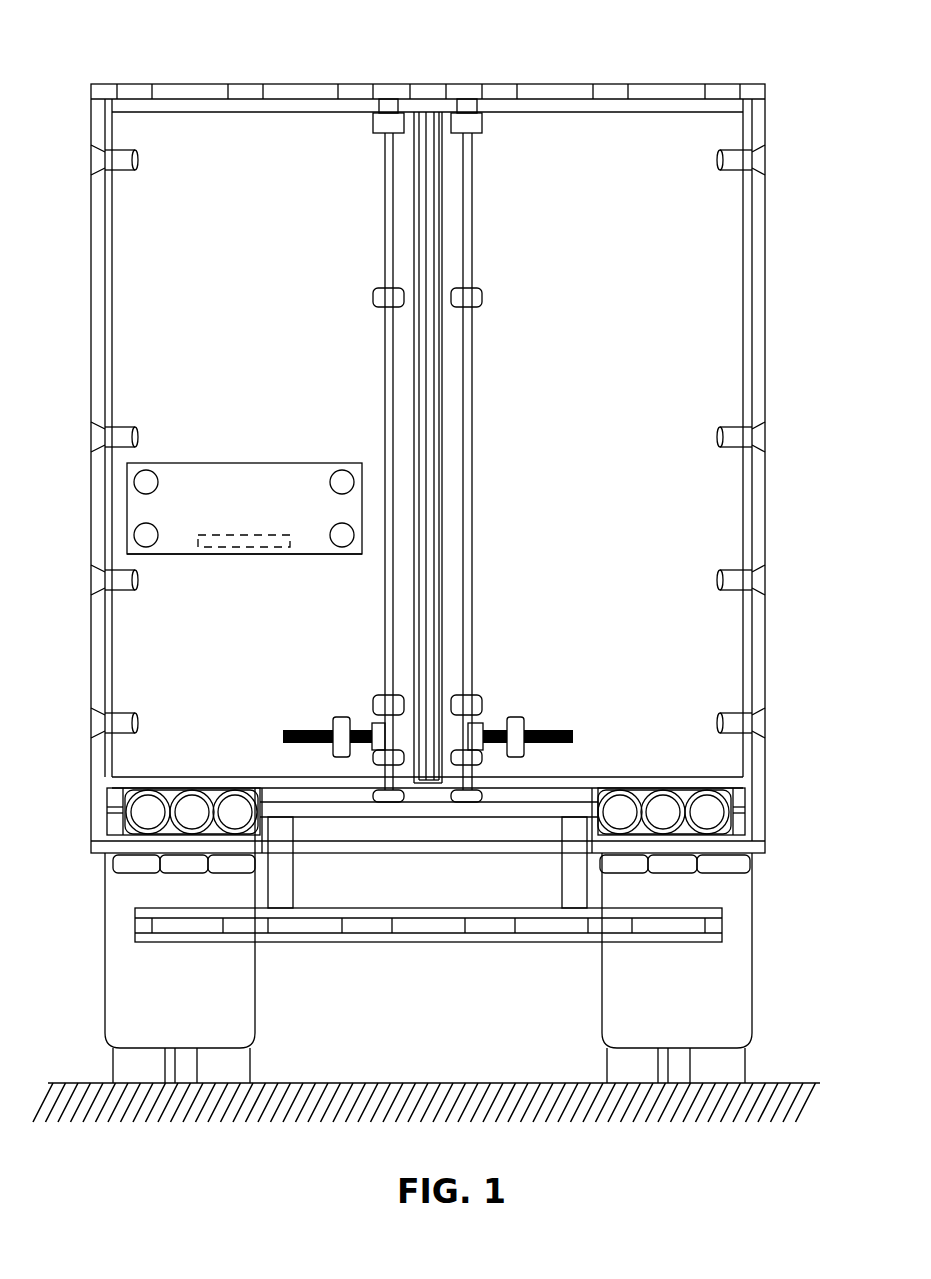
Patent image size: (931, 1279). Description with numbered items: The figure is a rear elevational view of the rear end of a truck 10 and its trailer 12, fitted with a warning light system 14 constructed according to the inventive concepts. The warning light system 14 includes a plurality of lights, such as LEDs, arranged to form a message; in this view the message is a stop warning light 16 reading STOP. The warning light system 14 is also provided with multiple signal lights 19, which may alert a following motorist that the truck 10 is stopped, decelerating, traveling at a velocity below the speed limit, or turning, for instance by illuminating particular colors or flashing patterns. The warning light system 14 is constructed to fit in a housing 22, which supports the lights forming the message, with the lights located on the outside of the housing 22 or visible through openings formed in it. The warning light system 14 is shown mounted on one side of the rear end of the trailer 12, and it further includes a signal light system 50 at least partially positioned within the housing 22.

The truck 10 is at (193, 83).
The trailer 12 is at (767, 292).
The warning light system 14 is at (251, 473).
The stop warning light 16 is at (250, 556).
The signal lights 19 is at (143, 466).
The housing 22 is at (317, 462).
The signal light system 50 is at (268, 549).